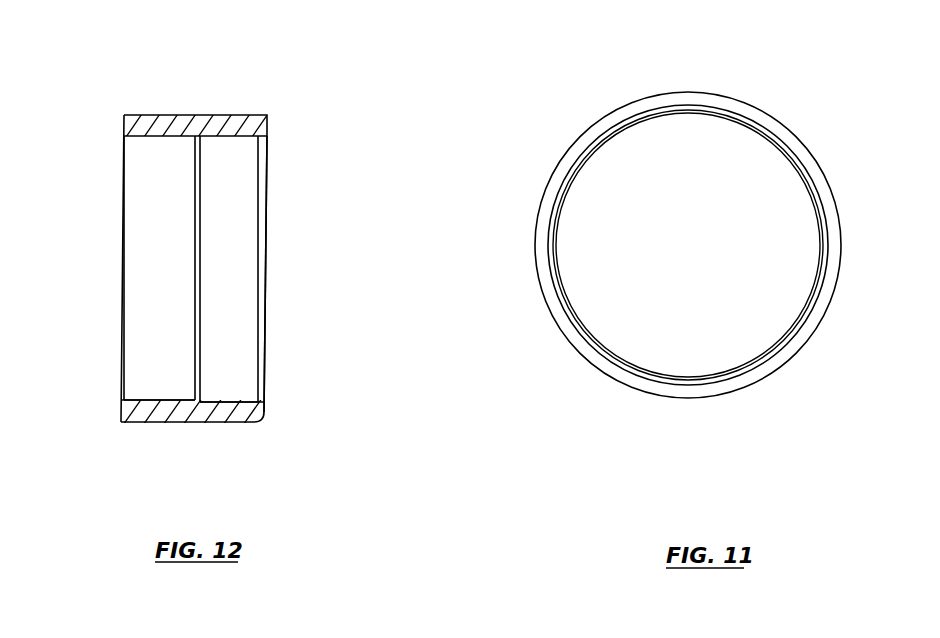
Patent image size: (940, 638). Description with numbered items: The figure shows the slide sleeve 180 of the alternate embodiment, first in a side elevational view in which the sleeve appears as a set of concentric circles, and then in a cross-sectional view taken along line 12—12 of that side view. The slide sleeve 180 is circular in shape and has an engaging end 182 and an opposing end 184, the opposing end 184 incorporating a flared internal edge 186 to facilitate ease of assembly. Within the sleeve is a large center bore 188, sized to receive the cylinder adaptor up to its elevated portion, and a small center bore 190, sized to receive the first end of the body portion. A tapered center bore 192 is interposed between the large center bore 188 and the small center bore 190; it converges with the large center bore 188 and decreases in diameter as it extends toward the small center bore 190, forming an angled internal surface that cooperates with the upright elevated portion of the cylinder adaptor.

In FIG. 12, the slide sleeve 180 is at (297, 110).
In FIG. 11, the slide sleeve 180 is at (807, 108).
In FIG. 12, the engaging end 182 is at (113, 425).
In FIG. 12, the opposing end 184 is at (268, 426).
In FIG. 12, the flared internal edge 186 is at (263, 402).
In FIG. 12, the large center bore 188 is at (248, 270).
In FIG. 12, the small center bore 190 is at (178, 270).
In FIG. 12, the tapered center bore 192 is at (200, 192).
In FIG. 11, the section line 12— 12 is at (691, 78).